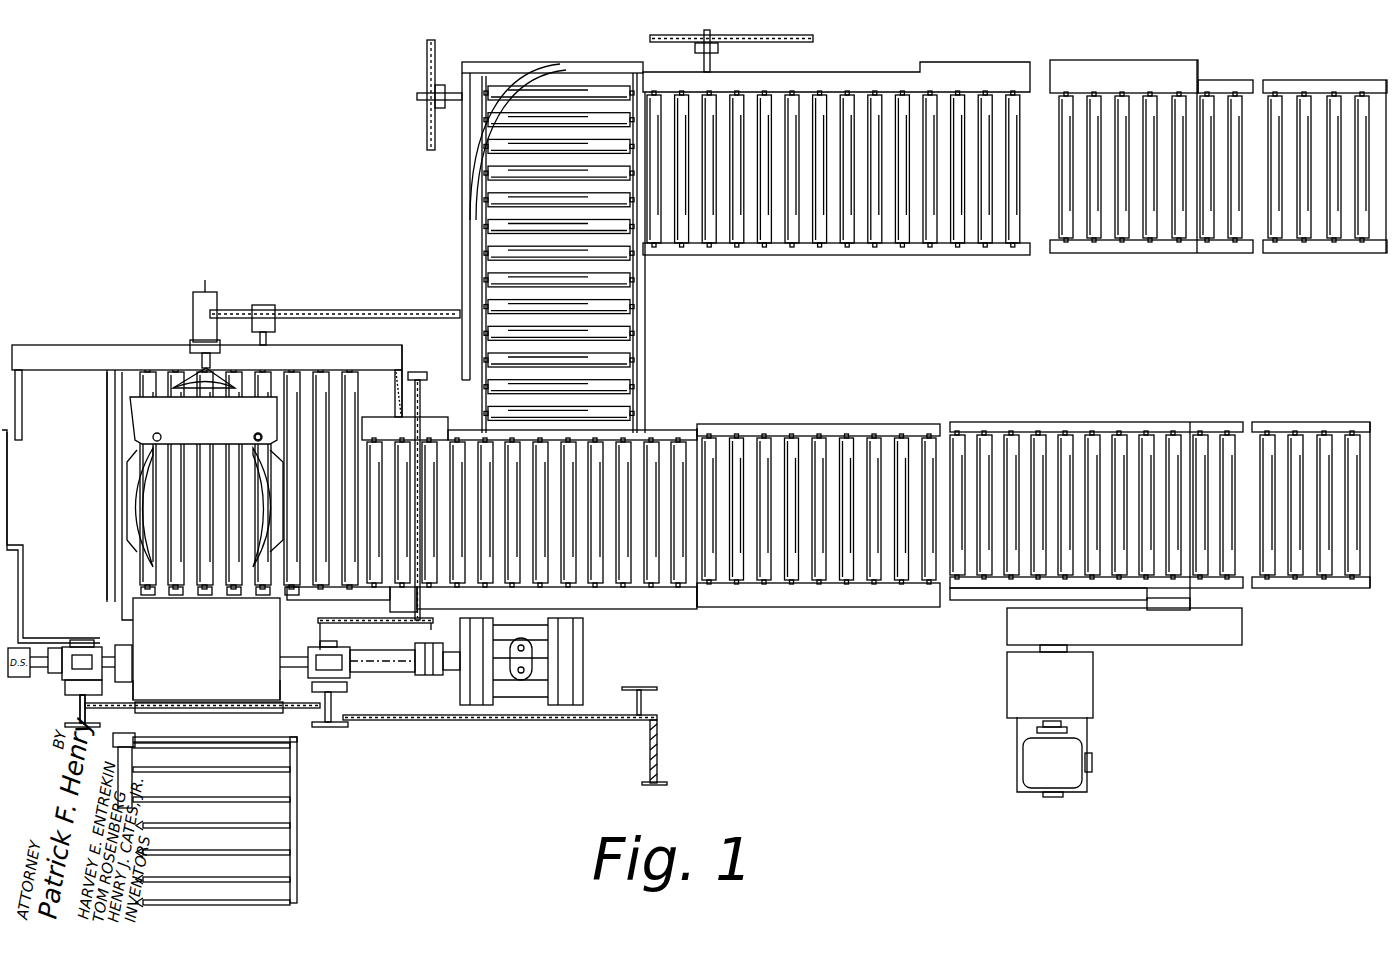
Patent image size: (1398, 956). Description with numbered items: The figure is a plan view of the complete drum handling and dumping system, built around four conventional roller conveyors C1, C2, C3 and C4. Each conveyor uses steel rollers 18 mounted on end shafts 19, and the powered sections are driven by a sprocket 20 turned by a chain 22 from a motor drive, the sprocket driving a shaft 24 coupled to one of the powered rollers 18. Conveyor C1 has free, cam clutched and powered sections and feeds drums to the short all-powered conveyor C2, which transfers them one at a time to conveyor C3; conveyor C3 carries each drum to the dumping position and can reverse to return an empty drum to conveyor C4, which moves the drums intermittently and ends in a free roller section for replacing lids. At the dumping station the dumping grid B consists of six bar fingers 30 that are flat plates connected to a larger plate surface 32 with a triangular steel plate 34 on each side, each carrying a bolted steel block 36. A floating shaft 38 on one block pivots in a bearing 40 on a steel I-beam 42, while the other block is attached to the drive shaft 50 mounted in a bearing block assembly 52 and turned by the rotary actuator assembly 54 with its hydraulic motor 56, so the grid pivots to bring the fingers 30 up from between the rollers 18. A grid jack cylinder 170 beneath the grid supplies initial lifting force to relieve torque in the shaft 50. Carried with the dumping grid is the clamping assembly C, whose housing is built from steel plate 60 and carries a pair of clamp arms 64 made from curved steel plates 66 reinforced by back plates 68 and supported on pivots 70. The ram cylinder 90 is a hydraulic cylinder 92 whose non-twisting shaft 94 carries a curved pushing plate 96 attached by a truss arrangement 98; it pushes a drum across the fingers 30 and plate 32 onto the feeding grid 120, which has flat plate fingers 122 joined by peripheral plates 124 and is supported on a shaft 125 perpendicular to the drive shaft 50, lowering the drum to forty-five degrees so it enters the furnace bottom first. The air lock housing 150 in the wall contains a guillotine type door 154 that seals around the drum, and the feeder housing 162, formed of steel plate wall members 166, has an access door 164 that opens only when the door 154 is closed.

The roller 18 is at (756, 230).
The end shaft 19 is at (898, 230).
The sprocket 20 is at (700, 44).
The chain 22 is at (808, 35).
The shaft 24 is at (714, 58).
The bar finger 30 is at (165, 600).
The plate surface 32 is at (258, 636).
The triangular steel plate 34 is at (280, 640).
The steel block 36 is at (133, 705).
The floating shaft 38 is at (55, 648).
The bearing 40 is at (72, 647).
The steel I-beam 42 is at (80, 704).
The drive shaft 50 is at (402, 636).
The bearing block assembly 52 is at (330, 668).
The rotary actuator assembly 54 is at (622, 650).
The hydraulic motor 56 is at (536, 690).
The steel plate 60 is at (192, 422).
The clamp arm 64 is at (254, 437).
The curved steel plate 66 is at (133, 505).
The back plate 68 is at (283, 460).
The pivot 70 is at (161, 436).
The ram cylinder 90 is at (218, 292).
The hydraulic cylinder 92 is at (206, 290).
The shaft 94 is at (196, 350).
The curved pushing plate 96 is at (182, 378).
The truss arrangement 98 is at (250, 318).
The feeding grid 120 is at (298, 825).
The flat plate finger 122 is at (268, 795).
The peripheral plate 124 is at (285, 738).
The shaft 125 is at (135, 752).
The air lock housing 150 is at (35, 392).
The guillotine type door 154 is at (440, 455).
The feeder housing 162 is at (658, 742).
The access door 164 is at (226, 704).
The steel plate wall member 166 is at (657, 778).
The grid jack cylinder 170 is at (125, 390).
The clamping assembly C is at (140, 418).
The dumping grid B is at (127, 633).
The conveyor C1 is at (963, 258).
The conveyor C2 is at (460, 210).
The conveyor C3 is at (742, 614).
The conveyor C4 is at (975, 420).